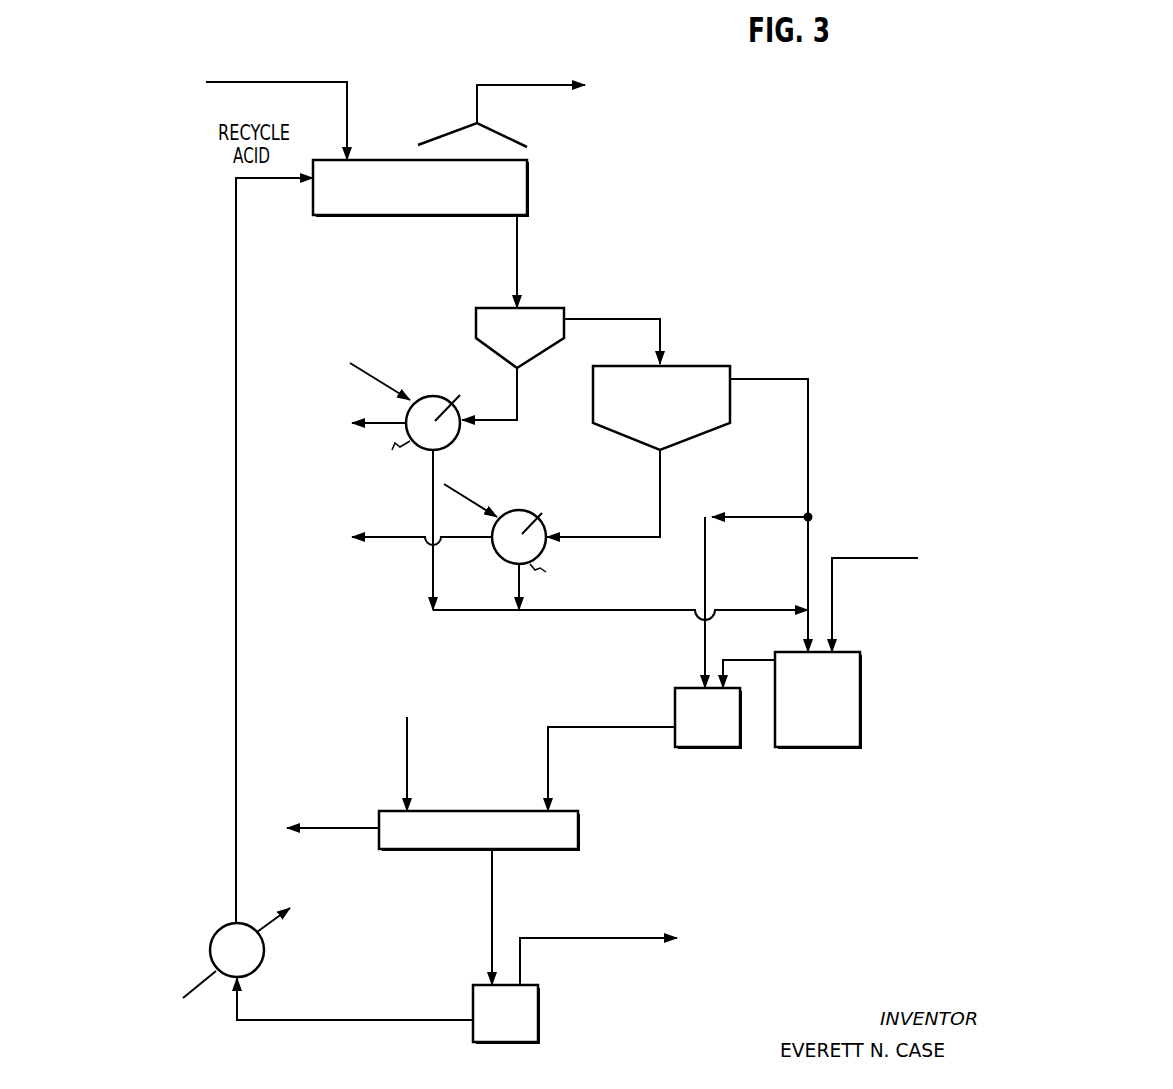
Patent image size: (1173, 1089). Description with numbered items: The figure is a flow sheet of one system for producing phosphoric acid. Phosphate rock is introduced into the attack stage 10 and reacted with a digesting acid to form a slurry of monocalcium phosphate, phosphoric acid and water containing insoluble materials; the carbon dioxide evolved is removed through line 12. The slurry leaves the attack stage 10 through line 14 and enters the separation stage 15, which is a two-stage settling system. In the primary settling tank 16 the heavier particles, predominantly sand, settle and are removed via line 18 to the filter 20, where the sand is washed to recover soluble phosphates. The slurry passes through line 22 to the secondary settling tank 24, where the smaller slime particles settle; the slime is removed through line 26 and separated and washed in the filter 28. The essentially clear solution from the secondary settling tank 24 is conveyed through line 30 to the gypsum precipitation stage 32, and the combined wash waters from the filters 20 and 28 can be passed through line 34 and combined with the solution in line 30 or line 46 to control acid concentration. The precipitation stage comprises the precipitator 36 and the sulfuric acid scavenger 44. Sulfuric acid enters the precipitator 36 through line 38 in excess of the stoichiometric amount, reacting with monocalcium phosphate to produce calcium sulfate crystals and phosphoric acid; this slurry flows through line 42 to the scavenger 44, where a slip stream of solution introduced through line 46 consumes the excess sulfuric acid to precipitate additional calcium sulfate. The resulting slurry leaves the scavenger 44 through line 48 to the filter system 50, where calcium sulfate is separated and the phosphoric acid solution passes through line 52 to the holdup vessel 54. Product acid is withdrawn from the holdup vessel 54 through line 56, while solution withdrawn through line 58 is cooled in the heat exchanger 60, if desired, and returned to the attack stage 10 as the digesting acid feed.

The attack stage 10 is at (367, 133).
The line 12 is at (501, 99).
The line 14 is at (543, 262).
The separation stage 15 is at (694, 263).
The primary settling tank 16 is at (501, 334).
The line 18 is at (510, 394).
The filter 20 is at (388, 477).
The line 22 is at (712, 341).
The secondary settling tank 24 is at (675, 417).
The line 26 is at (603, 493).
The filter 28 is at (449, 537).
The line 30 is at (793, 515).
The gypsum precipitation stage 32 is at (916, 773).
The line 34 is at (620, 630).
The precipitator 36 is at (832, 713).
The line 38 is at (843, 584).
The line 42 is at (749, 655).
The sulfuric acid scavenger 44 is at (720, 728).
The line 46 is at (758, 582).
The line 48 is at (611, 749).
The filter system 50 is at (585, 838).
The line 52 is at (470, 917).
The holdup vessel 54 is at (518, 1023).
The line 56 is at (667, 942).
The line 58 is at (355, 999).
The heat exchanger 60 is at (249, 946).